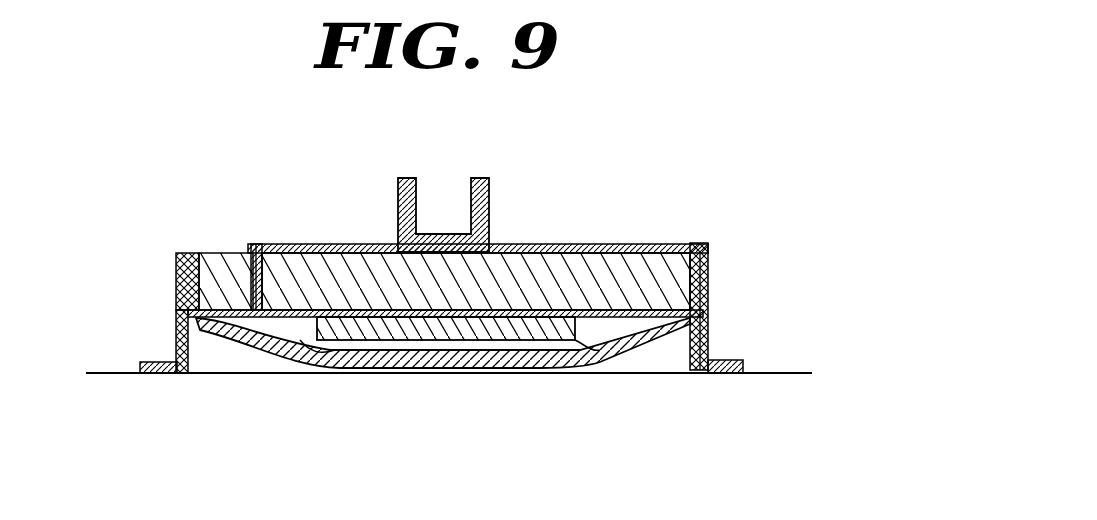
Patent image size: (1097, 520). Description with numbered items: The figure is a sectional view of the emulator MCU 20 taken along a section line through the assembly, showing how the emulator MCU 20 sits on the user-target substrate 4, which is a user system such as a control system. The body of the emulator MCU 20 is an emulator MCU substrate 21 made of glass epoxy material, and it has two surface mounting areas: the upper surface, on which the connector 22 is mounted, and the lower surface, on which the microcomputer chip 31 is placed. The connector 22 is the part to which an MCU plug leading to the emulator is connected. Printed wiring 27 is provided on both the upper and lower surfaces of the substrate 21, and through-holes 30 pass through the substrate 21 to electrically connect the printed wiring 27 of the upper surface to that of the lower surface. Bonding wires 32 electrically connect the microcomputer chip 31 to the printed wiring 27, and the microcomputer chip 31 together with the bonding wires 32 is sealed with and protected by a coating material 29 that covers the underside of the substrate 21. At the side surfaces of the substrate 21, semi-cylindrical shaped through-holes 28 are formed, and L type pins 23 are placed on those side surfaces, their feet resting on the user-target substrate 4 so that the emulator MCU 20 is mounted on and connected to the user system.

The user-target substrate 4 is at (105, 375).
The emulator MCU 20 is at (622, 138).
The emulator MCU substrate 21 is at (673, 243).
The connector 22 is at (489, 200).
The L type pins 23 is at (163, 375).
The printed wiring 27 is at (315, 243).
The semi-cylindrical shaped through-holes 28 is at (192, 252).
The coating material 29 is at (503, 363).
The through-holes 30 is at (246, 278).
The microcomputer chip 31 is at (405, 355).
The bonding wires 32 is at (296, 355).